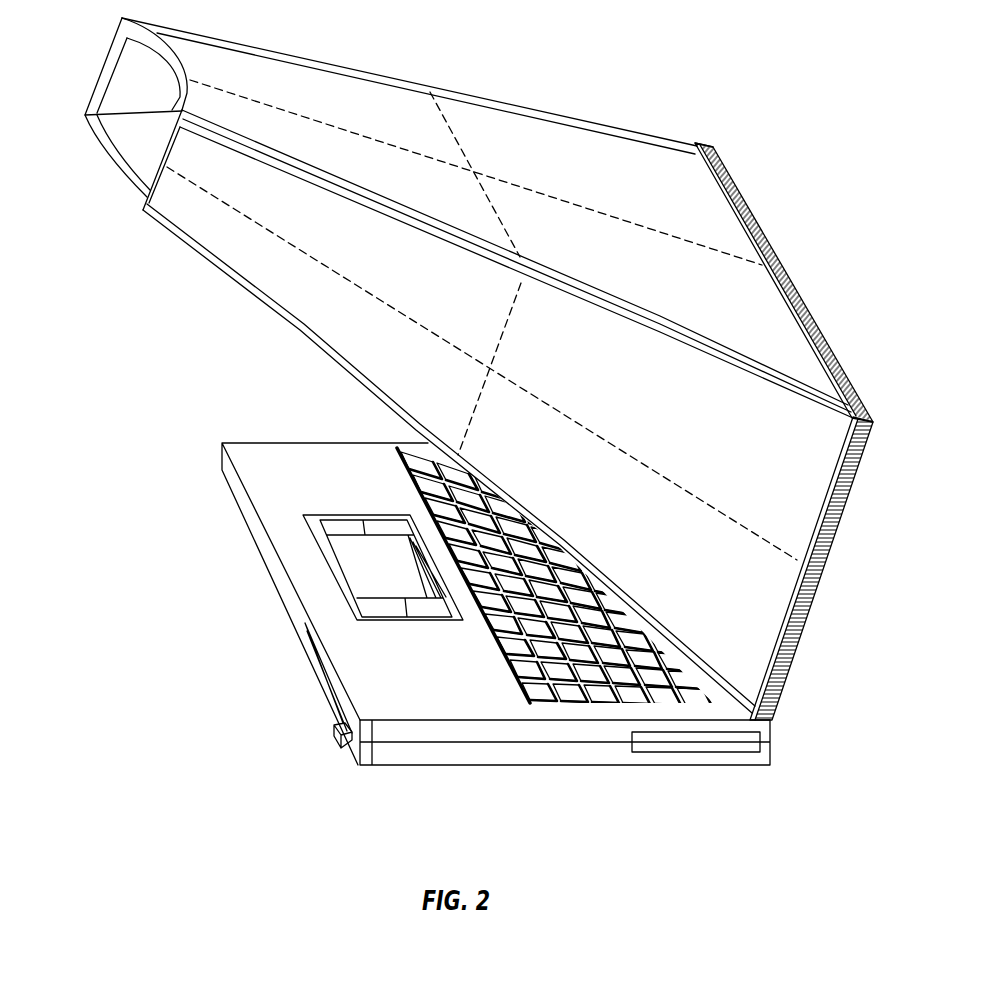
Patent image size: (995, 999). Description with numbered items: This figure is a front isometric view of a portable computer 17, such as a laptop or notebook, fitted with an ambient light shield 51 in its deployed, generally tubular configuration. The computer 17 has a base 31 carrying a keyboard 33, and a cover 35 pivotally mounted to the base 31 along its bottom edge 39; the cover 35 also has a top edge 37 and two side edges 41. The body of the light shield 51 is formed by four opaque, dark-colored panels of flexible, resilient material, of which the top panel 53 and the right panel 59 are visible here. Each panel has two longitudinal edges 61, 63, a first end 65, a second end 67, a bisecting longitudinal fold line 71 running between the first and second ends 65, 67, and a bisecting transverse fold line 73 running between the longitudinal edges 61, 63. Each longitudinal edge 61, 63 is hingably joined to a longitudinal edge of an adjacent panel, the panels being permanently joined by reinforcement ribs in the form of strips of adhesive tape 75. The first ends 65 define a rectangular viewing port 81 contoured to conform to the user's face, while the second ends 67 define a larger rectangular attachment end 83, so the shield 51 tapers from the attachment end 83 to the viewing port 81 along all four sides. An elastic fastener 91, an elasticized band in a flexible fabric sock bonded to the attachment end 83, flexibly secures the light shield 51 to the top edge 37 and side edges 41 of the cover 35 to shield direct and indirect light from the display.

The portable computer 17 is at (185, 533).
The base 31 is at (493, 765).
The keyboard 33 is at (588, 708).
The cover 35 is at (832, 560).
The top edge 37 is at (833, 357).
The bottom edge 39 is at (753, 722).
The side edges 41 is at (827, 513).
The light shield 51 is at (473, 365).
The top panel 53 is at (380, 97).
The right panel 59 is at (260, 258).
The longitudinal edge 61 is at (268, 162).
The longitudinal edge 63 is at (233, 137).
The first end 65 is at (112, 40).
The second end 67 is at (732, 216).
The longitudinal fold line 71 is at (343, 277).
The transverse fold line 73 is at (467, 160).
The adhesive tape strips 75 is at (373, 192).
The viewing port 81 is at (90, 67).
The attachment end 83 is at (798, 288).
The elastic fastener 91 is at (693, 143).